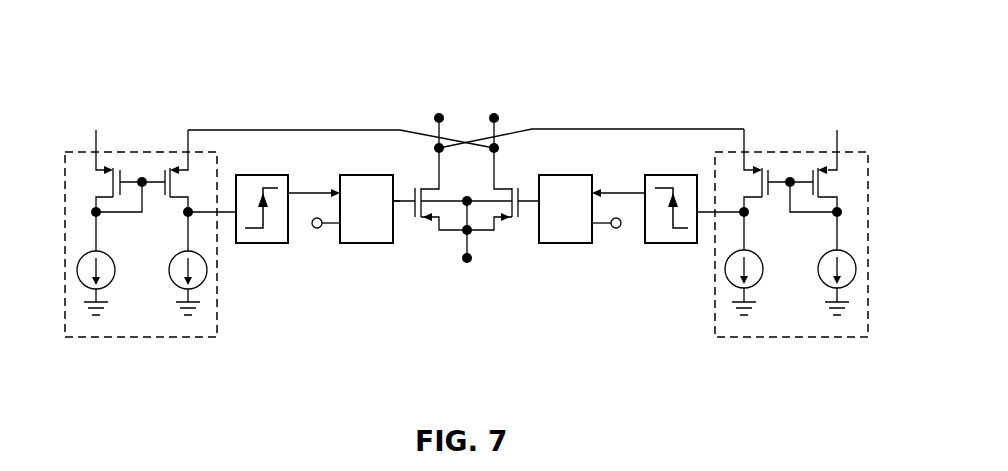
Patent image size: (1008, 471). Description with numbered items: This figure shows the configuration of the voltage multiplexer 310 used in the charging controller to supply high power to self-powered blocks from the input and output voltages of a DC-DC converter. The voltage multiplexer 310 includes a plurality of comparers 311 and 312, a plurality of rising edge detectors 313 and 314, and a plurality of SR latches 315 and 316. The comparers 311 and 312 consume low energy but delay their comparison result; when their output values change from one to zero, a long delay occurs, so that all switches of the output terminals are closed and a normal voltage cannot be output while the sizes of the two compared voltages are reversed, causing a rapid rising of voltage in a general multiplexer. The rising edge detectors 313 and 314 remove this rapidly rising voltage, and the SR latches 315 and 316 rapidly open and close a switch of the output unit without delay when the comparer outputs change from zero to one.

The voltage multiplexer 310 is at (812, 54).
The comparer 311 is at (190, 338).
The comparer 312 is at (758, 338).
The rising edge detector 313 is at (255, 245).
The rising edge detector 314 is at (665, 245).
The SR latch 315 is at (362, 245).
The SR latch 316 is at (555, 245).